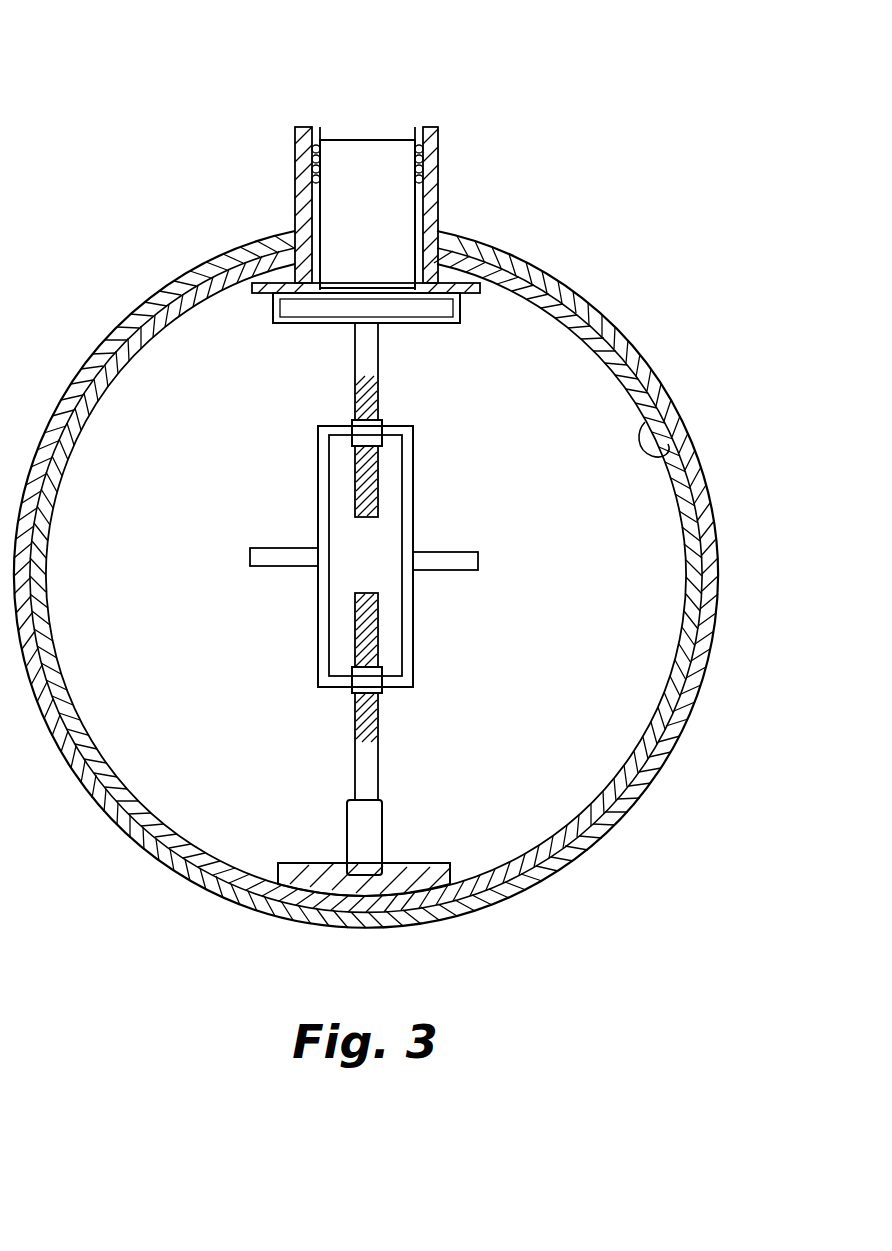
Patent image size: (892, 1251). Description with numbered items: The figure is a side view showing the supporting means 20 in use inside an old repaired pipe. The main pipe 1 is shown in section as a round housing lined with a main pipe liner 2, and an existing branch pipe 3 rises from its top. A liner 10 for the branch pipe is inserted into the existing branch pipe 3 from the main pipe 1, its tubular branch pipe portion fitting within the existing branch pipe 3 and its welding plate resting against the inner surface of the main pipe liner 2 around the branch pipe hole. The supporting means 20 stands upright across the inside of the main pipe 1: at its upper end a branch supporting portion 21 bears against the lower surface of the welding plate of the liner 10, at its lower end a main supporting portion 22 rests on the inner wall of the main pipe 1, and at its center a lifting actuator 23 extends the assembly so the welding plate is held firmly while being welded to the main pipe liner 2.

The main pipe 1 is at (630, 352).
The main pipe liner 2 is at (690, 458).
The existing branch pipe 3 is at (300, 160).
The liner 10 is at (370, 140).
The supporting means 20 is at (530, 561).
The branch supporting portion 21 is at (440, 338).
The main supporting portion 22 is at (387, 826).
The lifting actuator 23 is at (413, 643).